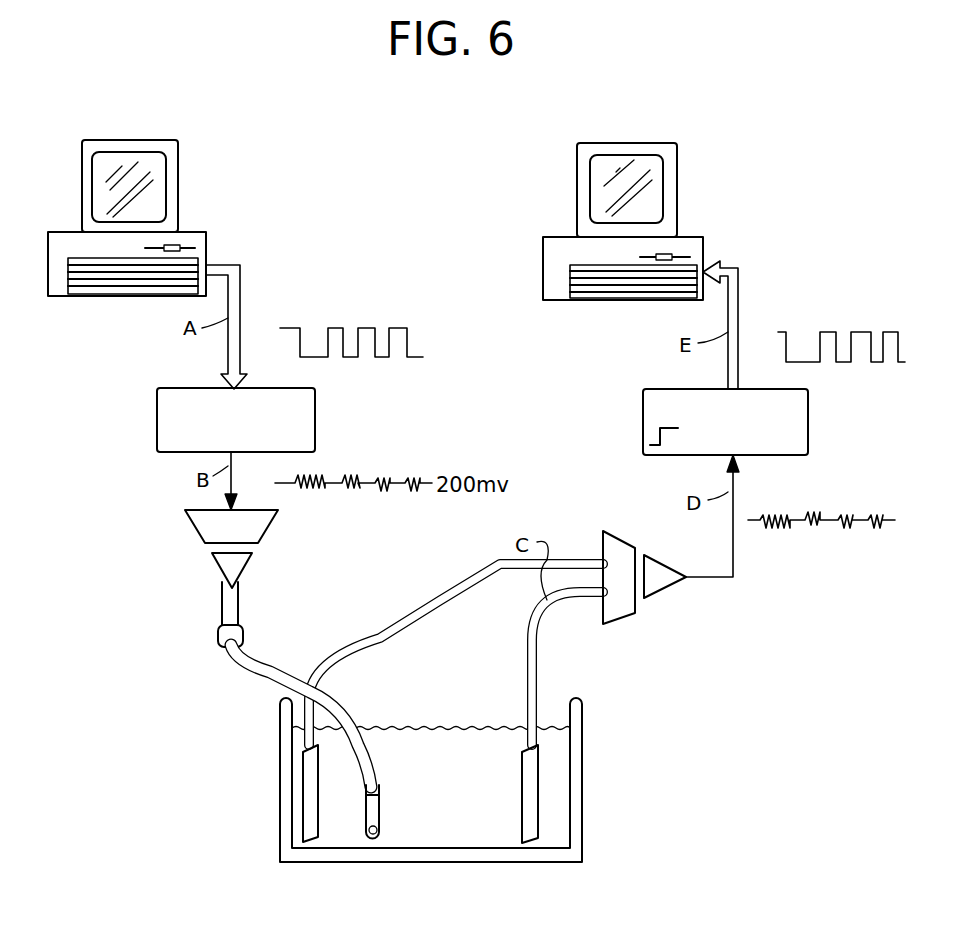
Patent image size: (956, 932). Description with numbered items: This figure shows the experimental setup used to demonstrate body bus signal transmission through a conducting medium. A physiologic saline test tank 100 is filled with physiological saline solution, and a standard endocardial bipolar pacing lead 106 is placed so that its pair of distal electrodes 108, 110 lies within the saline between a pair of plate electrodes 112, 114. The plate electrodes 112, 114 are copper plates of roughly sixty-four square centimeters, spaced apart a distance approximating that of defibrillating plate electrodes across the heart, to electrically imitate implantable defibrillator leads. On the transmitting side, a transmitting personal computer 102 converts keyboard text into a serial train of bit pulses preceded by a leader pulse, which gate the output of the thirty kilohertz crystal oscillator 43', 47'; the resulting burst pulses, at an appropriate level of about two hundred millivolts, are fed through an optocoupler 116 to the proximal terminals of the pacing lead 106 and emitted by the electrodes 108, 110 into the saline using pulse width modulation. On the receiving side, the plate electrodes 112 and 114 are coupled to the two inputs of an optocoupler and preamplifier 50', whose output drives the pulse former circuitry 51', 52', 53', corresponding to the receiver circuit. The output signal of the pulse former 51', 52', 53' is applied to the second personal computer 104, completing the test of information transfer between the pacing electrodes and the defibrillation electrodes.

The transmitting personal computer 102 is at (226, 180).
The second personal computer 104 is at (678, 190).
The crystal oscillator 43' is at (177, 420).
The crystal oscillator 47' is at (177, 420).
The pulse former circuitry 51' is at (646, 422).
The pulse former circuitry 52' is at (646, 422).
The pulse former circuitry 53' is at (646, 422).
The optocoupler 116 is at (266, 528).
The pacing lead 106 is at (253, 668).
The physiologic saline test tank 100 is at (582, 770).
The plate electrode 112 is at (317, 798).
The plate electrode 114 is at (533, 817).
The distal electrode 108 is at (400, 842).
The distal electrode 110 is at (375, 864).
The optocoupler and preamplifier 50' is at (666, 599).